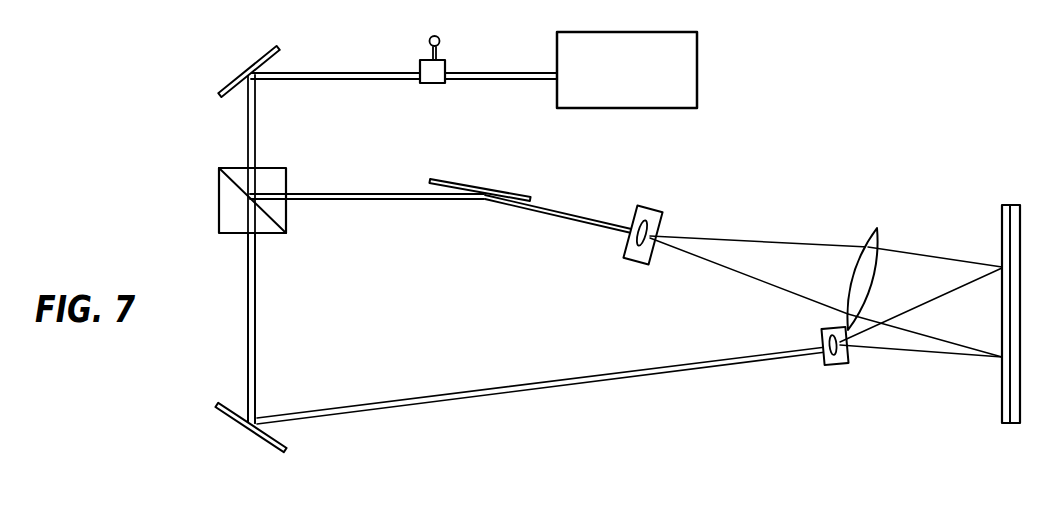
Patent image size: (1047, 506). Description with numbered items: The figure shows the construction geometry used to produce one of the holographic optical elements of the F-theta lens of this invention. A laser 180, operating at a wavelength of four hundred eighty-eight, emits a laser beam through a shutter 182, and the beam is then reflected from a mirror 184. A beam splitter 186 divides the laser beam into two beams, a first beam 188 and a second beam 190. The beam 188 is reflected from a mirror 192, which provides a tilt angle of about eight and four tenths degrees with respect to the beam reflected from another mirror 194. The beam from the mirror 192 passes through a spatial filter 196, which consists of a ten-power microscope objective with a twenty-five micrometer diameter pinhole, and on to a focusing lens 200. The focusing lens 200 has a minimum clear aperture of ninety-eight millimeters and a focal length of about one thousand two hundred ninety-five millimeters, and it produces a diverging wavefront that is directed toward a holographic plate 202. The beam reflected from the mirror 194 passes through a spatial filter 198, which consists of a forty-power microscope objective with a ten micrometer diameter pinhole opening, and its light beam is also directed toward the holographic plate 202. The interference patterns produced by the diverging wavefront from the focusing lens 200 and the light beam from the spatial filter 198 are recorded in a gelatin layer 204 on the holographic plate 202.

The laser 180 is at (697, 48).
The shutter 182 is at (445, 63).
The mirror 184 is at (251, 60).
The beam splitter 186 is at (286, 181).
The beam 188 is at (370, 200).
The beam 190 is at (257, 340).
The mirror 192 is at (445, 185).
The mirror 194 is at (218, 403).
The spatial filter 196 is at (652, 207).
The spatial filter 198 is at (826, 360).
The focusing lens 200 is at (870, 235).
The holographic plate 202 is at (1018, 205).
The gelatin layer 204 is at (1002, 398).